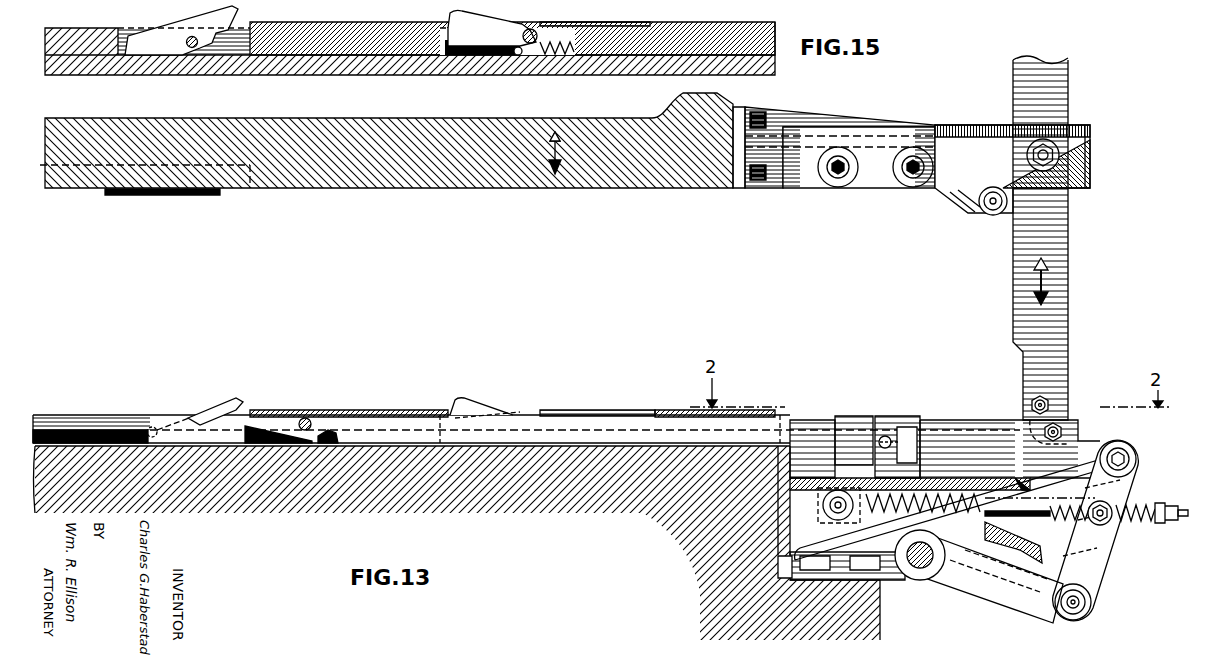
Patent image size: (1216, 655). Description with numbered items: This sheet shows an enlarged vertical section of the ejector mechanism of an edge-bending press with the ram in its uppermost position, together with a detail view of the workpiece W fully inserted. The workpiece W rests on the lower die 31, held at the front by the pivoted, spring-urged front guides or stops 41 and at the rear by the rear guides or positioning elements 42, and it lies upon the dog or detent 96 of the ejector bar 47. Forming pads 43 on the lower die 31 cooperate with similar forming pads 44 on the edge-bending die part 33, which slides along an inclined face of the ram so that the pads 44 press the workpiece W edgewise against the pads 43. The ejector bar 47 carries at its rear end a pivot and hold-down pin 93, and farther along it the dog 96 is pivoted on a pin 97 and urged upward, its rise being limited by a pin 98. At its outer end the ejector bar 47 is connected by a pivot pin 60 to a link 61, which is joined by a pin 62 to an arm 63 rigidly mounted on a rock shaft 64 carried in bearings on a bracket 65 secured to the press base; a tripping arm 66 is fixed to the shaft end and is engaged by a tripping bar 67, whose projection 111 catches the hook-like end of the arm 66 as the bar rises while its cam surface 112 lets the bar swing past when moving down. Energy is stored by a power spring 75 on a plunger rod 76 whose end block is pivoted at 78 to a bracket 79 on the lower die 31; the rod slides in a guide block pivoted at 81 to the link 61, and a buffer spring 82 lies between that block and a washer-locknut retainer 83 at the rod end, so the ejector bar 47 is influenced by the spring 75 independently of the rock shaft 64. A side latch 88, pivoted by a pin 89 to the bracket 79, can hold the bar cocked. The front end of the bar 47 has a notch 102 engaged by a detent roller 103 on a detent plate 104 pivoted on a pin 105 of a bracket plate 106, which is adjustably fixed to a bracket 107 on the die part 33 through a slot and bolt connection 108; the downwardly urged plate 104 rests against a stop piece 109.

In FIG. 15, the lower die 31 is at (688, 28).
In FIG. 13, the lower die 31 is at (555, 505).
In FIG. 15, the edge-bending die part 33 is at (455, 190).
In FIG. 15, the front guides or stops 41 is at (481, 17).
In FIG. 13, the front guides or stops 41 is at (468, 404).
In FIG. 15, the rear guides or positioning elements 42 is at (232, 12).
In FIG. 13, the rear guides or positioning elements 42 is at (233, 398).
In FIG. 15, the forming pads 43 is at (592, 22).
In FIG. 13, the forming pads 43 is at (600, 410).
In FIG. 15, the forming pads 44 is at (182, 197).
In FIG. 13, the ejector bar 47 is at (803, 420).
In FIG. 13, the pivot pin 60 is at (1135, 455).
In FIG. 13, the link 61 is at (1104, 560).
In FIG. 13, the pin 62 is at (1083, 617).
In FIG. 13, the arm 63 is at (985, 605).
In FIG. 13, the rock shaft 64 is at (918, 580).
In FIG. 13, the bracket 65 is at (881, 622).
In FIG. 13, the trigger or tripping arm 66 is at (1024, 548).
In FIG. 13, the tripping bar 67 is at (1068, 282).
In FIG. 13, the power spring 75 is at (1076, 507).
In FIG. 13, the plunger rod 76 is at (1182, 516).
In FIG. 13, the pivot 78 is at (842, 490).
In FIG. 13, the bracket 79 is at (800, 478).
In FIG. 13, the pivot 81 is at (1110, 525).
In FIG. 13, the buffer spring 82 is at (1136, 507).
In FIG. 13, the washer-locknut retainer 83 is at (1168, 505).
In FIG. 13, the side latch 88 is at (848, 418).
In FIG. 13, the pin 89 is at (905, 418).
In FIG. 13, the pivot and hold-down pin 93 is at (152, 425).
In FIG. 13, the dog or detent 96 is at (330, 410).
In FIG. 13, the pin 97 is at (306, 417).
In FIG. 13, the pin 98 is at (312, 447).
In FIG. 13, the notch 102 is at (1081, 436).
In FIG. 15, the detent roller 103 is at (992, 216).
In FIG. 15, the detent plate 104 is at (982, 140).
In FIG. 15, the pin 105 is at (1072, 124).
In FIG. 15, the bracket plate 106 is at (897, 132).
In FIG. 15, the bracket 107 is at (805, 118).
In FIG. 15, the slot and bolt connection 108 is at (905, 190).
In FIG. 15, the stop piece 109 is at (1092, 133).
In FIG. 13, the projection 111 is at (1030, 400).
In FIG. 13, the cam surface 112 is at (1040, 428).
In FIG. 15, the workpiece W is at (325, 23).
In FIG. 13, the workpiece W is at (388, 412).